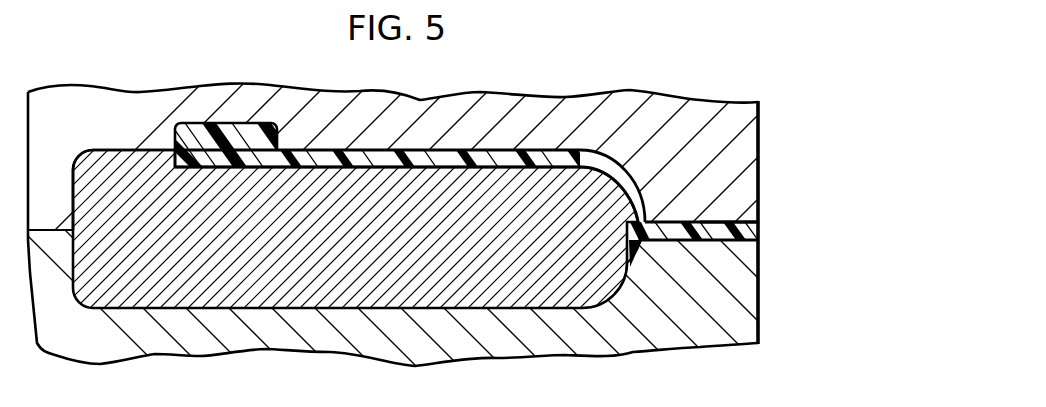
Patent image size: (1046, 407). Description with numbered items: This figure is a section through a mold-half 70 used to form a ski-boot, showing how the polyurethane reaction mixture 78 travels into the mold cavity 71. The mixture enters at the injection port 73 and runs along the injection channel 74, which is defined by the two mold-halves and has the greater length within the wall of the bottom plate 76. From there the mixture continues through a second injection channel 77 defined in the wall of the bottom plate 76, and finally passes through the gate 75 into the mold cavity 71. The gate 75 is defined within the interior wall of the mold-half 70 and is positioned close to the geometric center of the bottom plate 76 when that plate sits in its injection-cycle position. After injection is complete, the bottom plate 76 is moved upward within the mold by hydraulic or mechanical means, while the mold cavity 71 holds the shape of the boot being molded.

The mold-half 70 is at (748, 139).
The mold cavity 71 is at (122, 148).
The injection port 73 is at (758, 232).
The injection channel 74 is at (747, 208).
The gate 75 is at (226, 126).
The bottom plate 76 is at (445, 285).
The injection channel 77 is at (386, 150).
The reaction mixture 78 is at (531, 154).